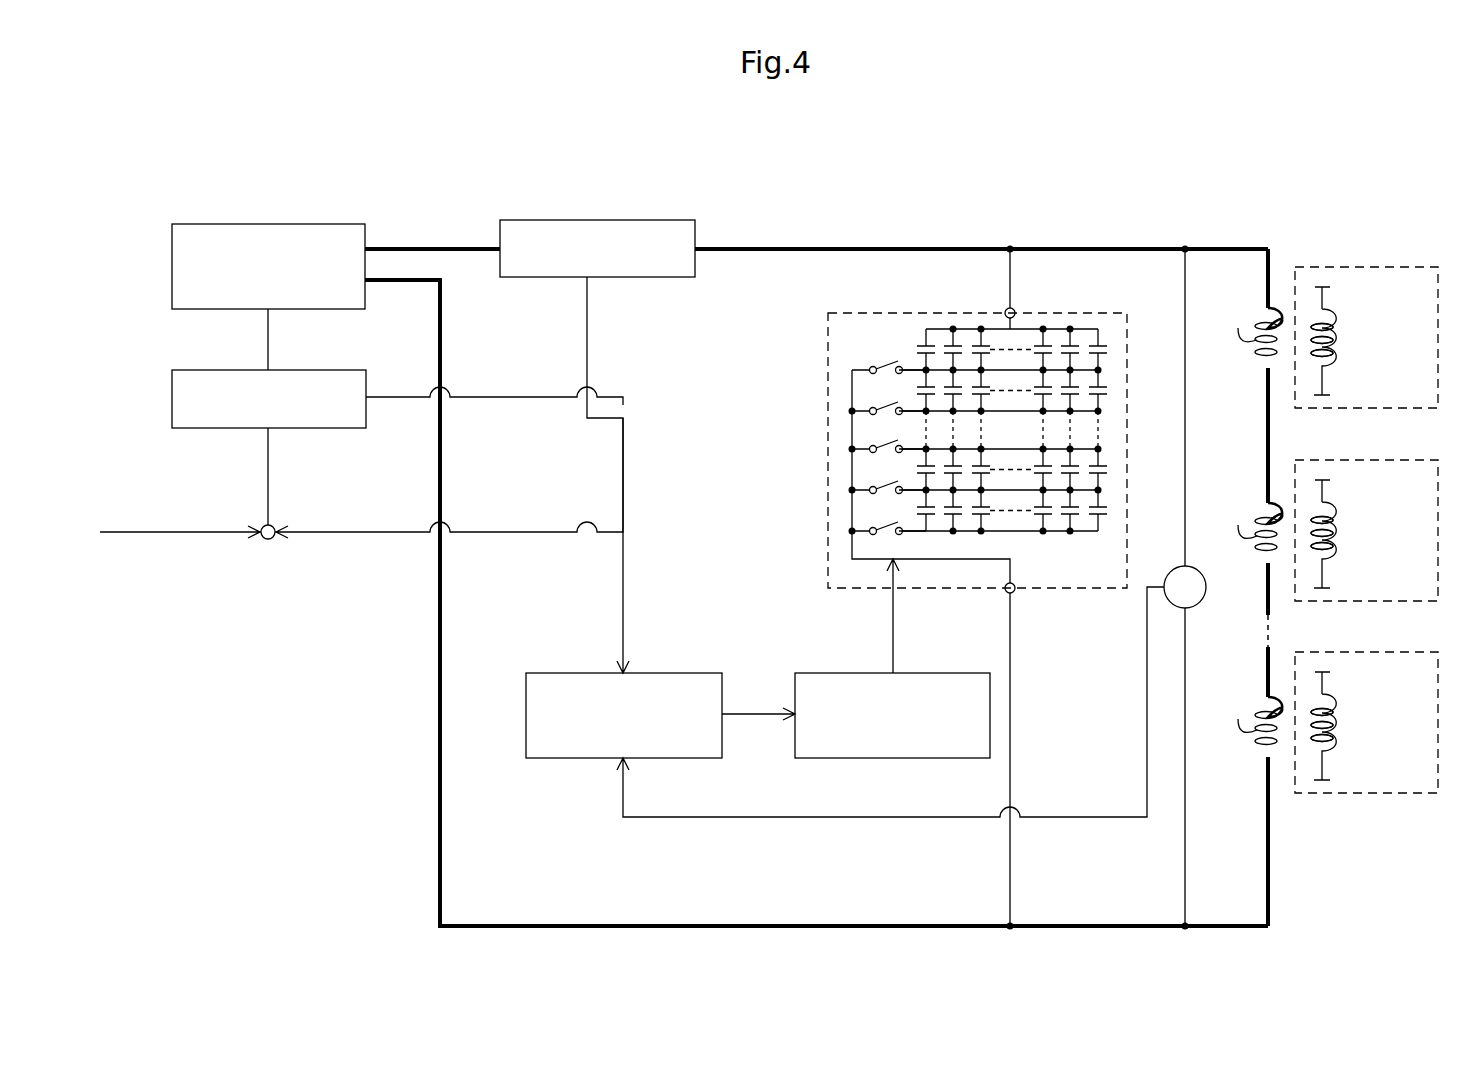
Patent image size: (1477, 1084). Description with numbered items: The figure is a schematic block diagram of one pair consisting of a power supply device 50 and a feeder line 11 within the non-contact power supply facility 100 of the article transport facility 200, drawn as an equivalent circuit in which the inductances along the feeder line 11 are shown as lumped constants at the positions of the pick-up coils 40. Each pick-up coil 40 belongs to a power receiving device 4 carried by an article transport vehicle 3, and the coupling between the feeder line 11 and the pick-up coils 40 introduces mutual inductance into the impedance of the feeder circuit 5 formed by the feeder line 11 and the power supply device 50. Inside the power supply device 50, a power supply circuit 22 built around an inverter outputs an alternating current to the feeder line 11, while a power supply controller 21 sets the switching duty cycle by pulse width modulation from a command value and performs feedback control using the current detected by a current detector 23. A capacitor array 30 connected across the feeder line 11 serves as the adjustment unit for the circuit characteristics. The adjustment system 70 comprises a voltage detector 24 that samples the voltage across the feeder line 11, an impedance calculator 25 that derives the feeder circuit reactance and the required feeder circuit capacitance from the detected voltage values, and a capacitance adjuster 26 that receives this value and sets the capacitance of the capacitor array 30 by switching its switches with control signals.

The article transport facility 200 is at (1367, 142).
The non-contact power supply facility 100 is at (1253, 218).
The adjustment system 70 is at (676, 533).
The feeder circuit 5 is at (816, 524).
The power supply device 50 is at (975, 522).
The feeder line 11 is at (872, 248).
The power supply circuit 22 is at (267, 224).
The power supply controller 21 is at (172, 398).
The current detector 23 is at (597, 220).
The impedance calculator 25 is at (662, 673).
The capacitance adjuster 26 is at (797, 673).
The voltage detector 24 is at (1200, 597).
The capacitor array 30 is at (828, 380).
The article transport vehicle 3 is at (1390, 268).
The power receiving device 4 is at (1341, 294).
The pick-up coil 40 is at (1333, 340).